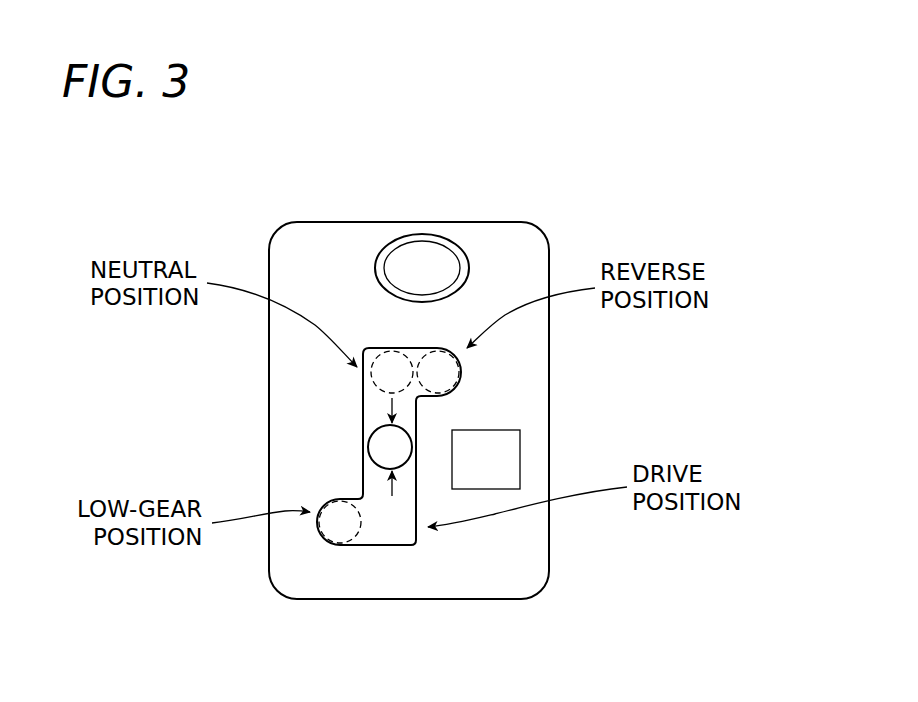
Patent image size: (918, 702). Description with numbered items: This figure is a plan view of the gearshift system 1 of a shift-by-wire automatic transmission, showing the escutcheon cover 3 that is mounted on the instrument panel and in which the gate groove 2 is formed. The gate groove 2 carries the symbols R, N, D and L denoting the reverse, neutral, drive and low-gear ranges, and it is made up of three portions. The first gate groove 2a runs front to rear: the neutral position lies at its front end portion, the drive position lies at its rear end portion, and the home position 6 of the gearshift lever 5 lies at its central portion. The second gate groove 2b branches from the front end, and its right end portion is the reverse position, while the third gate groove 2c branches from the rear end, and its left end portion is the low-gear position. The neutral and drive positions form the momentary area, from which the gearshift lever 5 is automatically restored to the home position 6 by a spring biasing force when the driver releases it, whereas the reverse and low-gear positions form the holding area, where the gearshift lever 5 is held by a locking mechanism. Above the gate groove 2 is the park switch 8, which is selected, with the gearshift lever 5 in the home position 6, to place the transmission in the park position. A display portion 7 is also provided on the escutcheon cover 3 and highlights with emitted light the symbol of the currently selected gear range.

The gearshift system 1 is at (290, 212).
The gate groove 2 is at (427, 420).
The first gate groove 2a is at (367, 383).
The second gate groove 2b is at (460, 374).
The third gate groove 2c is at (327, 537).
The escutcheon cover 3 is at (520, 263).
The gearshift lever 5 is at (366, 432).
The home position 6 is at (354, 448).
The display portion 7 is at (520, 445).
The park switch 8 is at (443, 252).